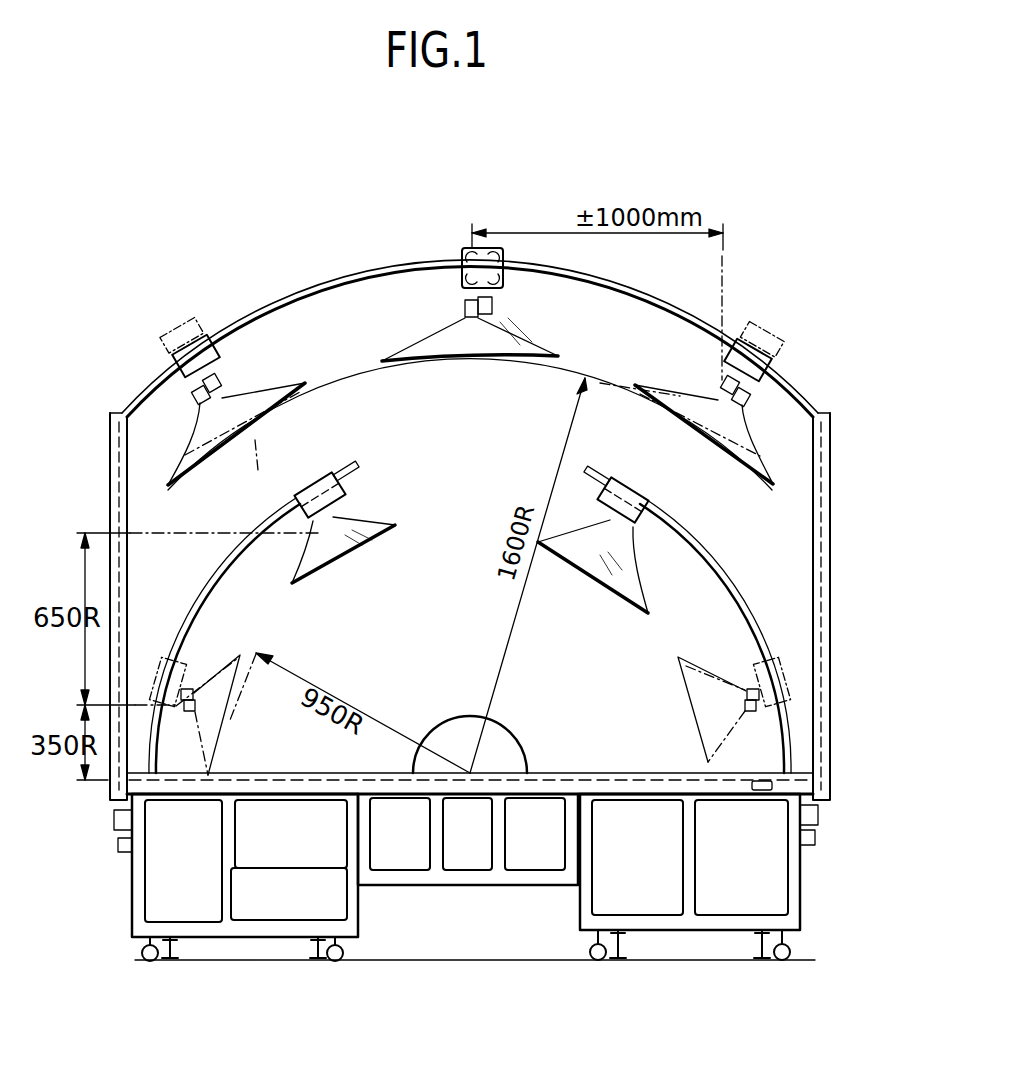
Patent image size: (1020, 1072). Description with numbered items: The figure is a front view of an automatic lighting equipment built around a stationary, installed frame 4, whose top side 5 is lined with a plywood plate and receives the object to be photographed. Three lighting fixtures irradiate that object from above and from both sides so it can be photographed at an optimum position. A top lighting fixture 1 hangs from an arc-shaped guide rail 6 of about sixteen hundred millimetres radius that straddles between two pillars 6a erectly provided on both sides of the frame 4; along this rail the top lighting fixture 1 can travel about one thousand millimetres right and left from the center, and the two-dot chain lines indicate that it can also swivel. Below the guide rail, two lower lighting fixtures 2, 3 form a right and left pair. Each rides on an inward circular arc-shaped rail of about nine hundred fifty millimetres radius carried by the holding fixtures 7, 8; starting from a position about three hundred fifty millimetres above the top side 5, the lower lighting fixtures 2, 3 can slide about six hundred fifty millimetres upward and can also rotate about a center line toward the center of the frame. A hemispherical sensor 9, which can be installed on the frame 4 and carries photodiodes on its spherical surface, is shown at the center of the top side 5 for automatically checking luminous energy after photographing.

The top lighting fixture 1 is at (448, 360).
The lower lighting fixture 2 is at (594, 566).
The lower lighting fixture 3 is at (333, 556).
The frame 4 is at (797, 903).
The top side 5 is at (624, 773).
The arc-shaped guide rail 6 is at (288, 297).
The pillar 6a is at (125, 592).
The holding fixture 7 is at (724, 598).
The holding fixture 8 is at (219, 587).
The hemispherical sensor 9 is at (521, 738).